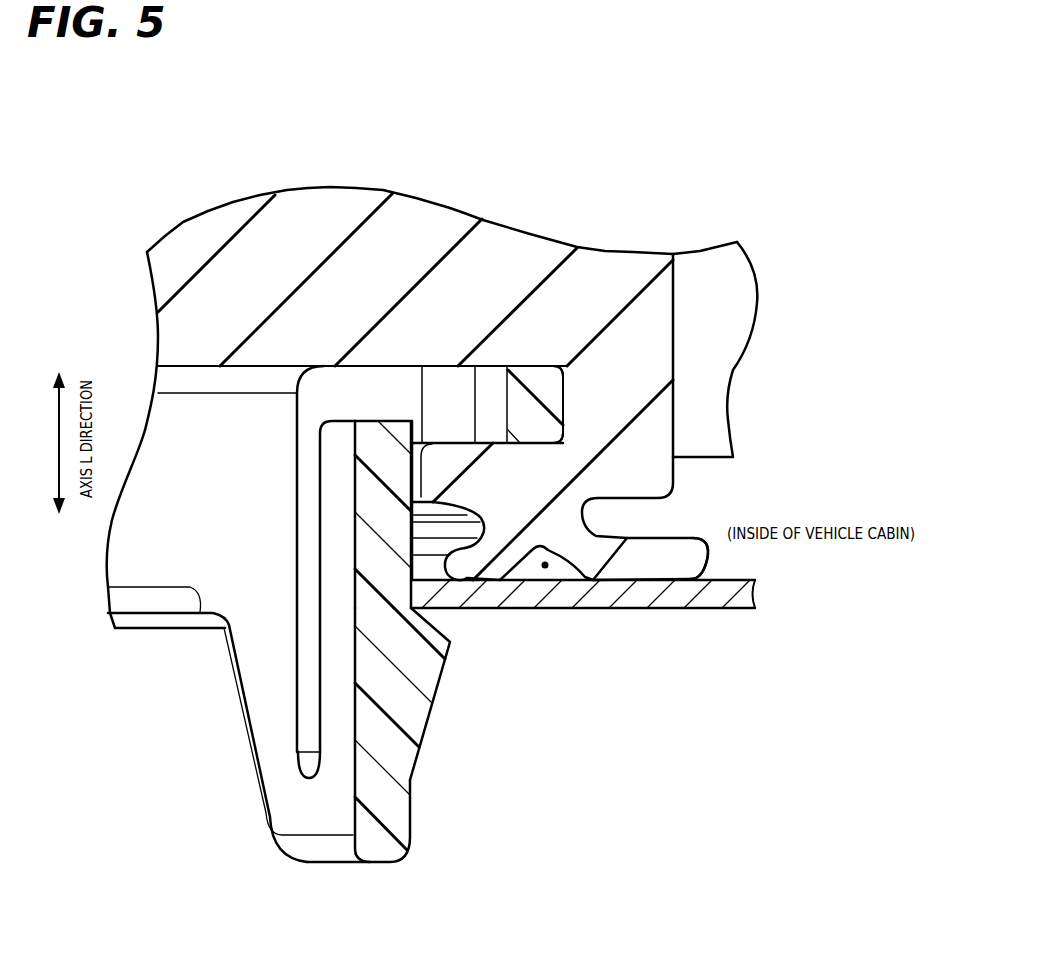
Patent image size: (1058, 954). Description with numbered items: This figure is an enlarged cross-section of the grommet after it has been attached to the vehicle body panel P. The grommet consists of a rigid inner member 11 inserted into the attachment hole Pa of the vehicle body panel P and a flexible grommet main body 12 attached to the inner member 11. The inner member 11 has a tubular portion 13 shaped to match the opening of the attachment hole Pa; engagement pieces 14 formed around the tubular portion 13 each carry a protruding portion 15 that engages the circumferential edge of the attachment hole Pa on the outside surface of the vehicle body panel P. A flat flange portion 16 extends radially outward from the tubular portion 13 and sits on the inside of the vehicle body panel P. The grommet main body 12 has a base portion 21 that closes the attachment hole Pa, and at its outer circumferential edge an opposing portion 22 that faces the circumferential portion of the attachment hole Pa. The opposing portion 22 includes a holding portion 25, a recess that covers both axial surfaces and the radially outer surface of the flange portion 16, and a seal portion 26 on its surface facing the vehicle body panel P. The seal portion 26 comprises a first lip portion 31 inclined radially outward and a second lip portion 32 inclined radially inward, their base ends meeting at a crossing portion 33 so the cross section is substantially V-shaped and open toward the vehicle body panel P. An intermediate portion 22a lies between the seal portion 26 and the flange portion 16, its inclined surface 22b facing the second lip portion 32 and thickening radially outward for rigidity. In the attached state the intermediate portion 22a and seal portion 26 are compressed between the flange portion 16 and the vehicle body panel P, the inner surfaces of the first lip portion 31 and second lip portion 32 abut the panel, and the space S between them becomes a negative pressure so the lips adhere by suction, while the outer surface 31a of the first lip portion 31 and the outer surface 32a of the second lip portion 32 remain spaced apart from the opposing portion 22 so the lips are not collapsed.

The inner member 11 is at (248, 747).
The grommet main body 12 is at (520, 242).
The tubular portion 13 is at (158, 573).
The engagement piece 14 is at (370, 605).
The protruding portion 15 is at (435, 675).
The flange portion 16 is at (543, 380).
The base portion 21 is at (178, 340).
The opposing portion 22 is at (663, 422).
The intermediate portion 22a is at (480, 478).
The inclined surface 22b is at (440, 515).
The holding portion 25 is at (552, 402).
The seal portion 26 is at (703, 547).
The first lip portion 31 is at (652, 565).
The outer surface of the first lip portion 31a is at (640, 540).
The second lip portion 32 is at (500, 567).
The outer surface of the second lip portion 32a is at (460, 533).
The crossing portion 33 is at (550, 520).
The vehicle body panel P is at (703, 608).
The attachment hole Pa is at (385, 614).
The space S is at (545, 568).